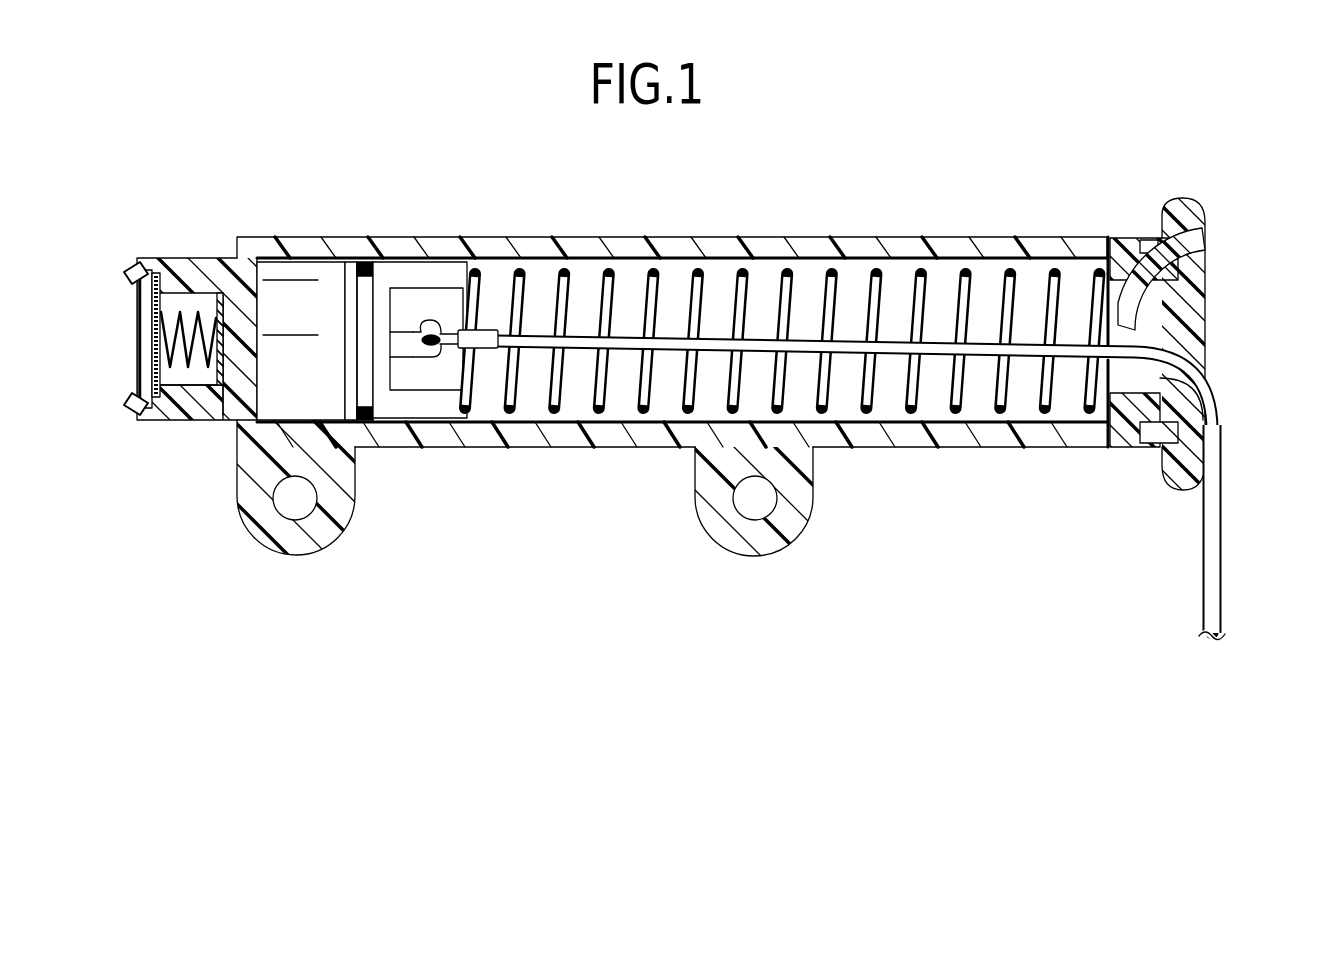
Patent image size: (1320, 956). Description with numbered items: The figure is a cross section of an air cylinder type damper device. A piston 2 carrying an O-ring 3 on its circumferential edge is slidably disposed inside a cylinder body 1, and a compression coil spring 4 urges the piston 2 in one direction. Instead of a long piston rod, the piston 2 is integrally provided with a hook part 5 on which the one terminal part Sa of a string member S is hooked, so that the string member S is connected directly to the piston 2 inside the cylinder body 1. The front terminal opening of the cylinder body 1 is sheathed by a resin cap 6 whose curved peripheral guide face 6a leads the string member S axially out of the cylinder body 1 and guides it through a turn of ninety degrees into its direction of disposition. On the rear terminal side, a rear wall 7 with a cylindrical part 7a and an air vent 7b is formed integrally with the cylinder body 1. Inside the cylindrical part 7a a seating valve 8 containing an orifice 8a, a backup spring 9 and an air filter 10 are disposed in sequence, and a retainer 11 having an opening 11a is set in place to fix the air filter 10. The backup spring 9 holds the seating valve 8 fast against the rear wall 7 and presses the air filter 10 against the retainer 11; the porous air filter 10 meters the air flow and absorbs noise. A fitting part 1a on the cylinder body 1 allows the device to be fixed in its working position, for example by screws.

The cylinder body 1 is at (820, 246).
The fitting part 1a is at (298, 540).
The piston 2 is at (412, 278).
The O-ring 3 is at (366, 262).
The compression coil spring 4 is at (908, 407).
The hook part 5 is at (438, 310).
The cap 6 is at (1198, 226).
The curved peripheral guide face 6a is at (1157, 330).
The rear wall 7 is at (242, 300).
The cylindrical part 7a is at (188, 267).
The air vent 7b is at (241, 342).
The seating valve 8 is at (220, 300).
The orifice 8a is at (207, 343).
The backup spring 9 is at (173, 305).
The air filter 10 is at (158, 428).
The retainer 11 is at (140, 290).
The opening 11a is at (148, 337).
The string member S is at (1222, 571).
The terminal part Sa is at (440, 358).